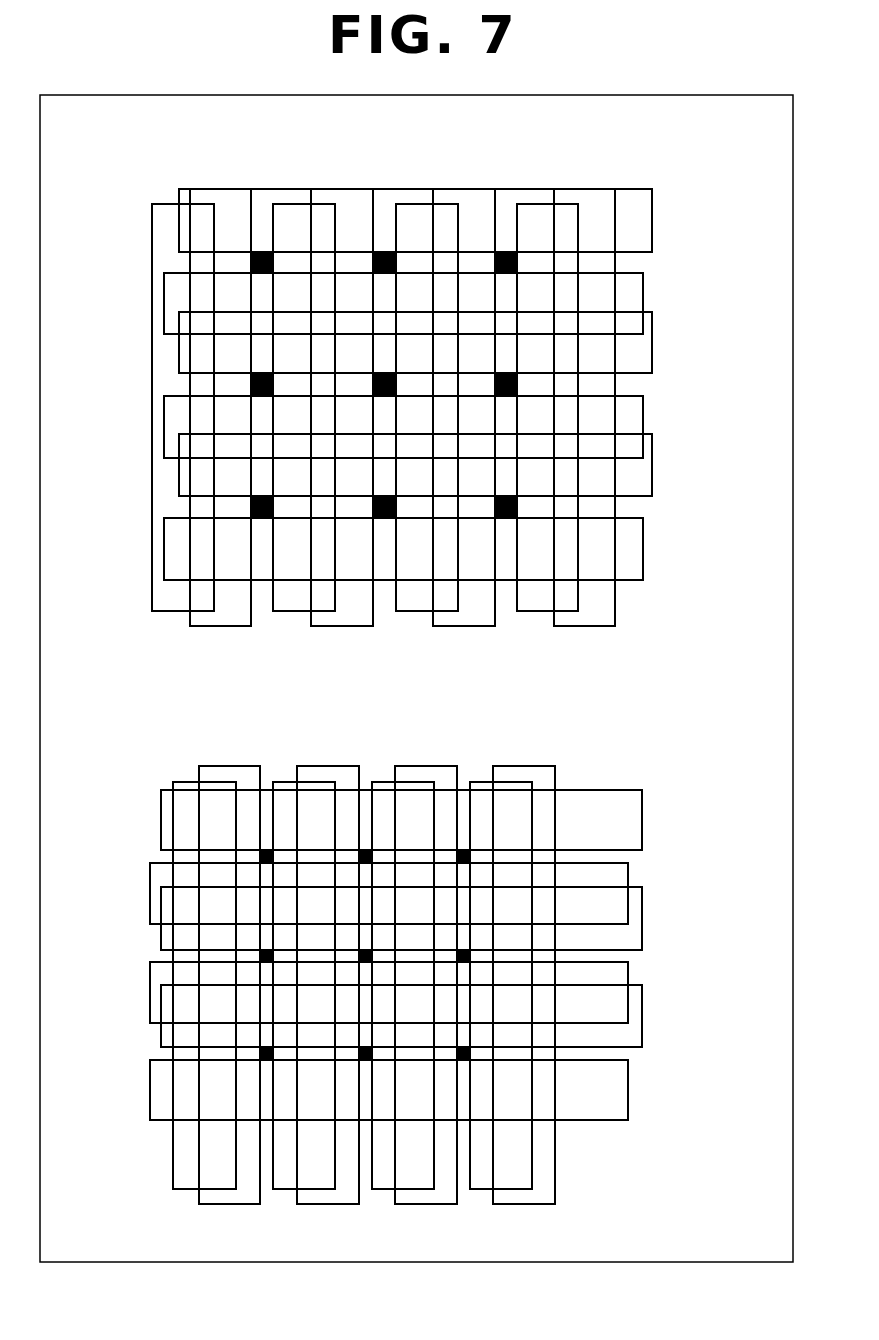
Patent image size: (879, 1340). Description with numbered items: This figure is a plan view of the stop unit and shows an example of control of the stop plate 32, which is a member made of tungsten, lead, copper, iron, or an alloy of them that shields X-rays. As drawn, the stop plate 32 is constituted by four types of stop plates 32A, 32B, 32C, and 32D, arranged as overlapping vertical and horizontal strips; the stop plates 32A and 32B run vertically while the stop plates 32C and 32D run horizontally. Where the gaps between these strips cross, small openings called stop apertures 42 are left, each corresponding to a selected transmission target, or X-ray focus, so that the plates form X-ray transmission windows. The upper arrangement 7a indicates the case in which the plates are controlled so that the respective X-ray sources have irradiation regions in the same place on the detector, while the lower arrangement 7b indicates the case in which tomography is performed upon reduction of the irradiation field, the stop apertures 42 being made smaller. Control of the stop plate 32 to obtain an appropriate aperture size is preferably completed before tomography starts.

The stop plate 32 is at (580, 168).
The stop plate 32A is at (166, 595).
The stop plate 32B is at (230, 612).
The stop plate 32C is at (643, 410).
The stop plate 32D is at (652, 468).
The stop aperture 42 is at (385, 250).
The stop plate control example 7a is at (657, 622).
The stop plate control example 7b is at (627, 1179).